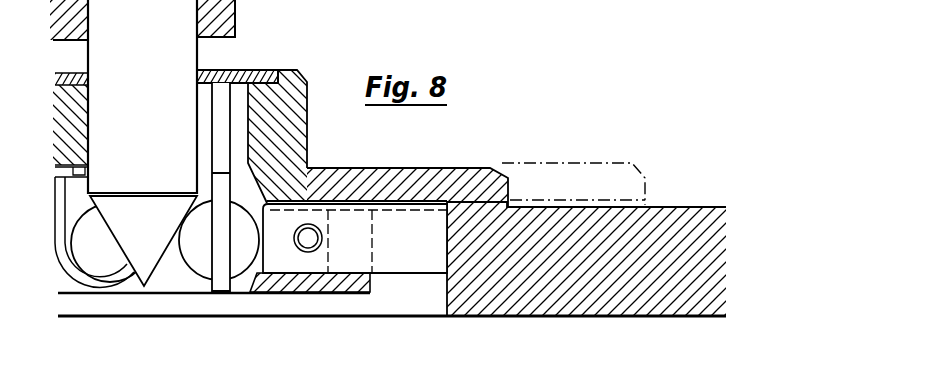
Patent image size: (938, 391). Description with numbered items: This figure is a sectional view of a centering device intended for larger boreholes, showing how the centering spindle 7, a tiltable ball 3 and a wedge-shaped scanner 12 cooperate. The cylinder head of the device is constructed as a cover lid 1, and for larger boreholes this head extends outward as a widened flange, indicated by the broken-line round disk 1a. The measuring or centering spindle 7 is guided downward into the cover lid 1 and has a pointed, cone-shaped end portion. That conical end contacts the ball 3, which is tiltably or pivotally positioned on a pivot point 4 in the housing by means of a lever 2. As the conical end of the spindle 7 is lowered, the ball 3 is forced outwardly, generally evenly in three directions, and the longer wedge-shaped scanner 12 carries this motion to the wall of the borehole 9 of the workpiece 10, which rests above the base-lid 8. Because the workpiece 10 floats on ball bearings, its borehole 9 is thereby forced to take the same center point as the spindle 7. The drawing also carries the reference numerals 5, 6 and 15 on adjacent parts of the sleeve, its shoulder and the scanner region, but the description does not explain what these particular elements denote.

The cover lid 1 is at (420, 182).
The widened flange 1a is at (560, 188).
The lever 2 is at (76, 268).
The tiltable ball 3 is at (105, 263).
The pivot point 4 is at (243, 72).
The sleeve 5 is at (237, 132).
The sleeve shoulder 6 is at (275, 72).
The centering spindle 7 is at (142, 65).
The base-lid 8 is at (313, 290).
The borehole 9 is at (447, 273).
The workpiece 10 is at (513, 270).
The wedge-shaped scanner 12 is at (398, 245).
The pin 15 is at (308, 238).